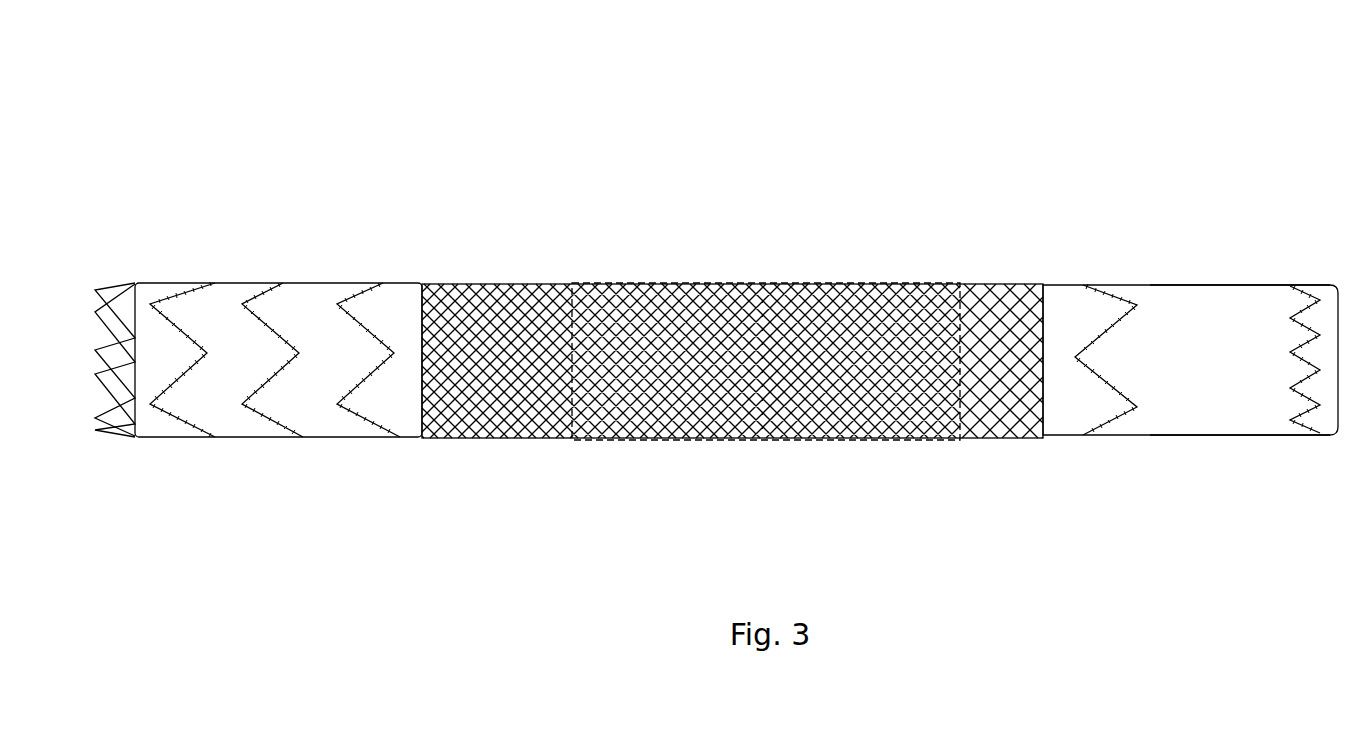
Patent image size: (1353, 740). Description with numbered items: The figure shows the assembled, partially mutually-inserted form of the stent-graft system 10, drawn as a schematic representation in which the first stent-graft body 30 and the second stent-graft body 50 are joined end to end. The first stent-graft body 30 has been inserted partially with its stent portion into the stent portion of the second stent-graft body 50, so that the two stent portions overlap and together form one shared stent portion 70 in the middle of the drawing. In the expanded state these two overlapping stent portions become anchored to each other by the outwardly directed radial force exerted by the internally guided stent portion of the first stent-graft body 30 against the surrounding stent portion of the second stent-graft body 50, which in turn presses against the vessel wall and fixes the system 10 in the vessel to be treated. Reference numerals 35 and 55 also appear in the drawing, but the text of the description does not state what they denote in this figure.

The stent-graft system 10 is at (840, 192).
The first stent-graft body 30 is at (1137, 258).
The zigzag stent ring 35 is at (320, 302).
The second stent-graft body 50 is at (395, 214).
The graft covering material 55 is at (1210, 428).
The shared stent portion 70 is at (687, 283).